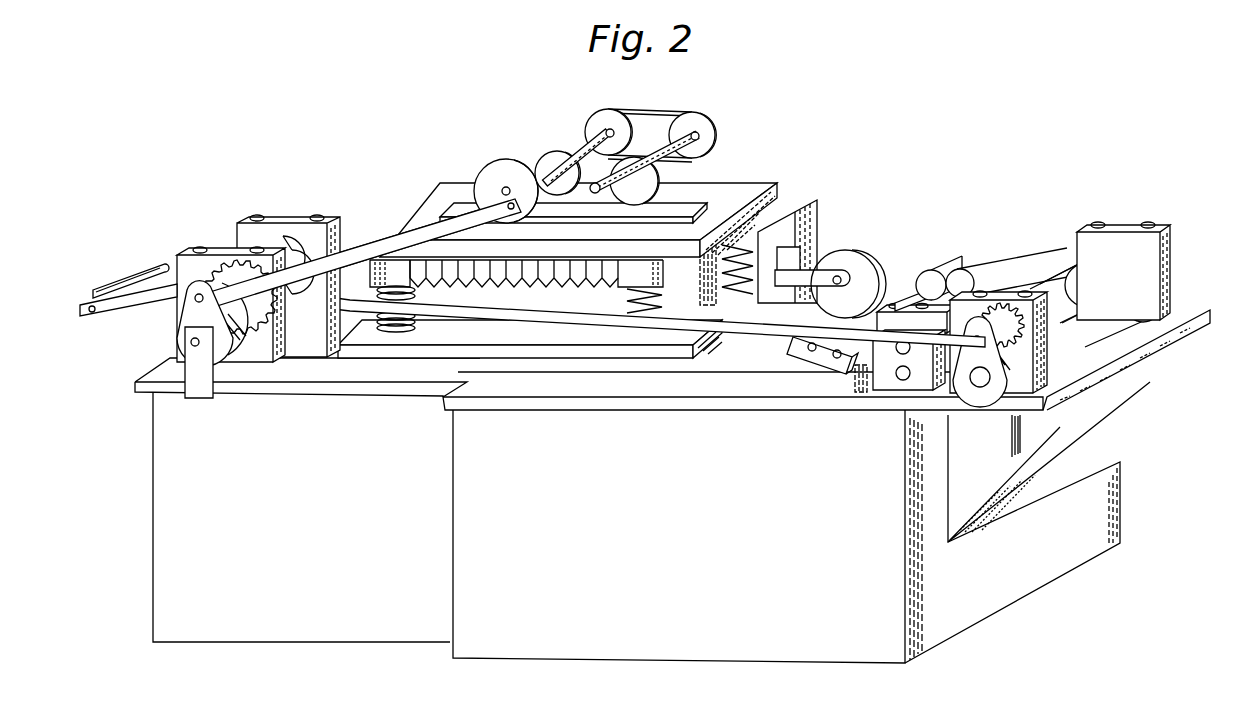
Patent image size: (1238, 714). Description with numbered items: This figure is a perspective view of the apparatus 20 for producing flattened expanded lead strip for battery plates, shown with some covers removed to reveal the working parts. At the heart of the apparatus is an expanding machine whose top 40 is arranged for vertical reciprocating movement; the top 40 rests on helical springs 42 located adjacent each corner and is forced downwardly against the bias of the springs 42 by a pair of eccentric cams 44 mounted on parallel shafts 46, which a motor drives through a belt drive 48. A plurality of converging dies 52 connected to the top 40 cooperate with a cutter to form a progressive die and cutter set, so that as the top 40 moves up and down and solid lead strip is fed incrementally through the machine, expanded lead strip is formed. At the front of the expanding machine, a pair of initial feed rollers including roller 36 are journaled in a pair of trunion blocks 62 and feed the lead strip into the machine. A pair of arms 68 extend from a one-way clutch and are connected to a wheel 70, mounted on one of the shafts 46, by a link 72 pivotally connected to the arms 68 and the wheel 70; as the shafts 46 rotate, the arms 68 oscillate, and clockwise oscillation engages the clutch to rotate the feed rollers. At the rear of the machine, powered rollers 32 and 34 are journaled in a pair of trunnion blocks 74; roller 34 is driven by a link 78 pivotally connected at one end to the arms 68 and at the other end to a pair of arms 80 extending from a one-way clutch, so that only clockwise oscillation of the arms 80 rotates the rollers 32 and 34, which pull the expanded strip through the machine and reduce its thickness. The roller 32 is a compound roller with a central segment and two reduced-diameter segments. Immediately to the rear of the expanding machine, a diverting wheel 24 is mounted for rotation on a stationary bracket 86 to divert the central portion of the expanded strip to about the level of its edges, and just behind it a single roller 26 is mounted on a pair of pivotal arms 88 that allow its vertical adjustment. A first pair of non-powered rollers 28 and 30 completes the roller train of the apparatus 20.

The apparatus 20 is at (806, 182).
The diverting wheel 24 is at (857, 266).
The single roller 26 is at (908, 285).
The non-powered roller 28 is at (1000, 278).
The non-powered roller 30 is at (935, 392).
The powered roller 32 is at (1122, 252).
The powered roller 34 is at (1120, 312).
The initial feed roller 36 is at (283, 243).
The top 40 is at (752, 190).
The helical springs 42 is at (395, 314).
The eccentric cams 44 is at (543, 162).
The shafts 46 is at (593, 146).
The belt drive 48 is at (650, 113).
The converging dies 52 is at (598, 276).
The trunion blocks 62 is at (249, 266).
The arms 68 is at (190, 313).
The wheel 70 is at (495, 178).
The link 72 is at (385, 243).
The trunnion blocks 74 is at (1155, 250).
The link 78 is at (532, 313).
The arms 80 is at (987, 398).
The stationary bracket 86 is at (822, 258).
The arms 88 is at (813, 362).